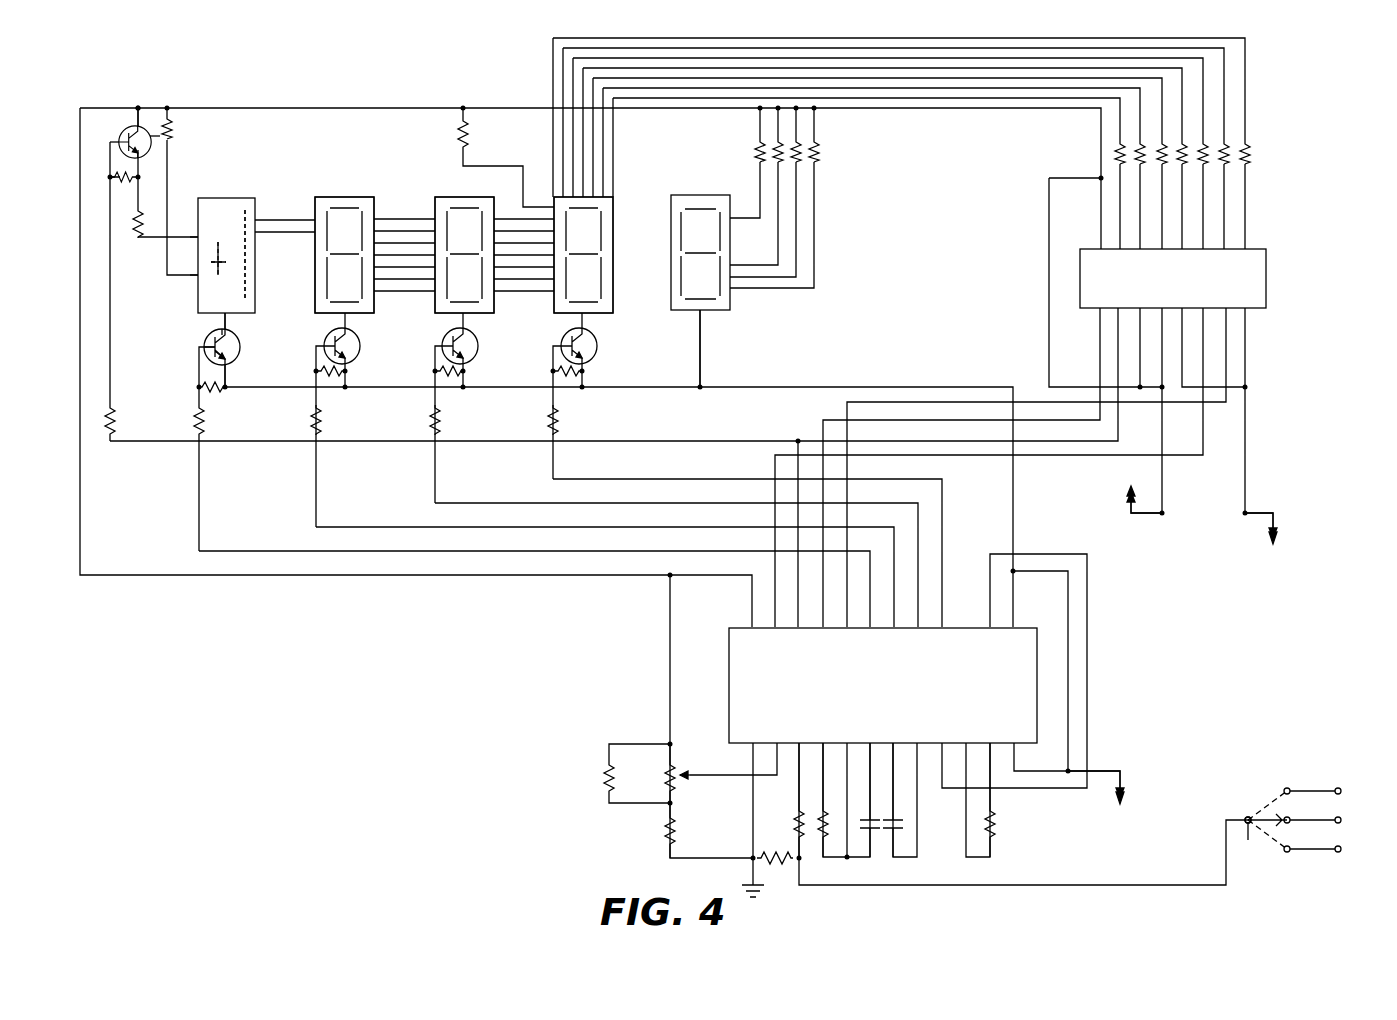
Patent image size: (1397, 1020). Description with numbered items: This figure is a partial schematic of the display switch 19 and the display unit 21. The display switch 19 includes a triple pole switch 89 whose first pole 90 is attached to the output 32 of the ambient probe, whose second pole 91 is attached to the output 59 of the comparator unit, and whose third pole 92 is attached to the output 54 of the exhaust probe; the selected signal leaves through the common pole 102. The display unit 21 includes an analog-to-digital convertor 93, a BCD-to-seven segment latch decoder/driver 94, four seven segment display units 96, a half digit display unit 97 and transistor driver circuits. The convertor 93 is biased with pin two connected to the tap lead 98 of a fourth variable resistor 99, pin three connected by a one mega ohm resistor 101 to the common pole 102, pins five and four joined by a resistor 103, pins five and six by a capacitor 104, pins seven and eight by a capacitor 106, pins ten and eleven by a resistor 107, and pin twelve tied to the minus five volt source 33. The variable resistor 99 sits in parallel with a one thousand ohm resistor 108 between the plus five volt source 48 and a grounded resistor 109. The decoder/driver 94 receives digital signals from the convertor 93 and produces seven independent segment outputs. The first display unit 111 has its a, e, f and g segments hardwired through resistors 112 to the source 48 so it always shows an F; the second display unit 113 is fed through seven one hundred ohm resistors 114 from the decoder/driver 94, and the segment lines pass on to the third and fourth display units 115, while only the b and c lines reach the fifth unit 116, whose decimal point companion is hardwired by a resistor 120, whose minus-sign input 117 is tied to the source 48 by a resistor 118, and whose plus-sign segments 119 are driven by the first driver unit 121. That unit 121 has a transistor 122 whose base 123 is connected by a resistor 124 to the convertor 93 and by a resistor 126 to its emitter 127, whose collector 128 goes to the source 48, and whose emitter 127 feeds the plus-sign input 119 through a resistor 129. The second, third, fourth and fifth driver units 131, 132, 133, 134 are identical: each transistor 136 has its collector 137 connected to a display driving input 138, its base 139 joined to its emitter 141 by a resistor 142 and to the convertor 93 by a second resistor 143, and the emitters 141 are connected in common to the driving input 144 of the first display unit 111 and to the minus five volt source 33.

The display switch 19 is at (1248, 817).
The display unit 21 is at (364, 593).
The output of the ambient probe 32 is at (1341, 852).
The −5 volt source 33 is at (1275, 529).
The +5 volt source 48 is at (1128, 508).
The output of the exhaust probe 54 is at (1341, 788).
The output of the comparator unit 59 is at (1341, 817).
The triple pole switch 89 is at (1248, 824).
The first pole 90 is at (1289, 852).
The second pole 91 is at (1289, 818).
The third pole 92 is at (1289, 788).
The analog-to-digital convertor 93 is at (740, 674).
The BCD-to-7 segment latch decoder/driver 94 is at (1268, 270).
The 7 segment display units 96 is at (338, 197).
The half digit display unit 97 is at (222, 198).
The tap lead 98 is at (692, 778).
The fourth variable resistor 99 is at (666, 768).
The 1 mega ohm resistor 101 is at (795, 822).
The common pole 102 is at (1245, 817).
The 470,000 ohm resistor 103 is at (818, 808).
The capacitor 104 is at (878, 816).
The capacitor 106 is at (900, 826).
The 300,000 ohm resistor 107 is at (994, 816).
The 1,000 ohm resistor 108 is at (606, 765).
The grounded 5,760 ohm resistor 109 is at (666, 830).
The first display unit 111 is at (720, 195).
The 330 ohm resistors 112 is at (814, 140).
The second display unit 113 is at (608, 273).
The 100 ohm resistors 114 is at (462, 197).
The fourth display unit 115 is at (364, 200).
The fifth display unit 116 is at (243, 203).
The minus-sign input 117 is at (195, 272).
The 100 ohm resistor 118 is at (173, 123).
The plus-sign segments 119 is at (196, 236).
The 330 ohm resistor 120 is at (458, 128).
The first driver unit 121 is at (138, 126).
The transistor 122 is at (153, 146).
The base 123 is at (124, 138).
The 3,300 ohm resistor 124 is at (116, 420).
The 3,300 ohm resistor 126 is at (118, 178).
The emitter 127 is at (142, 160).
The collector 128 is at (142, 110).
The 100 ohm resistor 129 is at (135, 224).
The second driver unit 131 is at (240, 341).
The third driver unit 132 is at (361, 339).
The fourth driver unit 133 is at (479, 339).
The fifth driver unit 134 is at (598, 339).
The transistor 136 is at (232, 356).
The collector 137 is at (227, 324).
The driving input 138 is at (215, 327).
The base 139 is at (210, 343).
The emitter 141 is at (229, 372).
The 3,300 ohm resistor 142 is at (215, 392).
The second 3,300 ohm resistor 143 is at (205, 419).
The driving input 144 is at (703, 314).